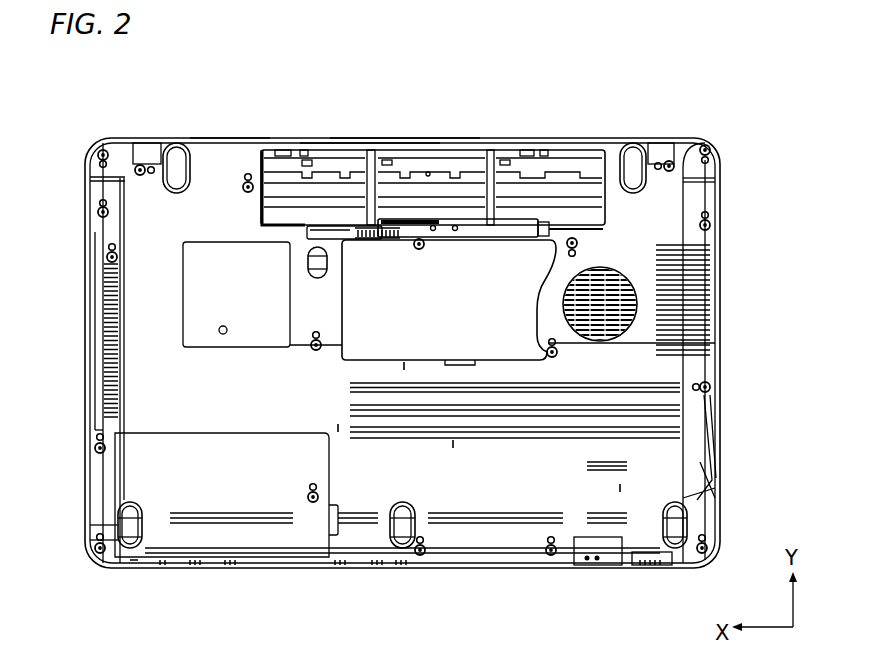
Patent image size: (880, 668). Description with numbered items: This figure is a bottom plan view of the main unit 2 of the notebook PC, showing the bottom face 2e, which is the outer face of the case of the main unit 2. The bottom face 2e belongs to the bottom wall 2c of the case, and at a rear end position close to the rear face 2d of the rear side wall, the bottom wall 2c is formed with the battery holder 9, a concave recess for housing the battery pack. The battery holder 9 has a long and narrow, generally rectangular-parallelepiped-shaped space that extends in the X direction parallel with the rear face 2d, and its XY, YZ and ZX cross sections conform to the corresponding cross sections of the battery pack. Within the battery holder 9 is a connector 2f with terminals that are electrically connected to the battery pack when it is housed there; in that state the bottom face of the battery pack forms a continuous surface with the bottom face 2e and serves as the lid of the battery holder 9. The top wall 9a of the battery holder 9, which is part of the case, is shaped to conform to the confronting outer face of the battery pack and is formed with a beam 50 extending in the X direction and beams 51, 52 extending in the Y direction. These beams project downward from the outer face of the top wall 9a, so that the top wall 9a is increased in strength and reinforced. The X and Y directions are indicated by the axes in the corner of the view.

The main unit 2 is at (670, 137).
The bottom wall 2c is at (230, 138).
The rear face 2d is at (371, 138).
The bottom face 2e is at (674, 188).
The connector 2f is at (375, 240).
The battery holder 9 is at (344, 158).
The top wall 9a is at (512, 148).
The beam 50 is at (273, 195).
The beam 51 is at (376, 150).
The beam 52 is at (497, 220).